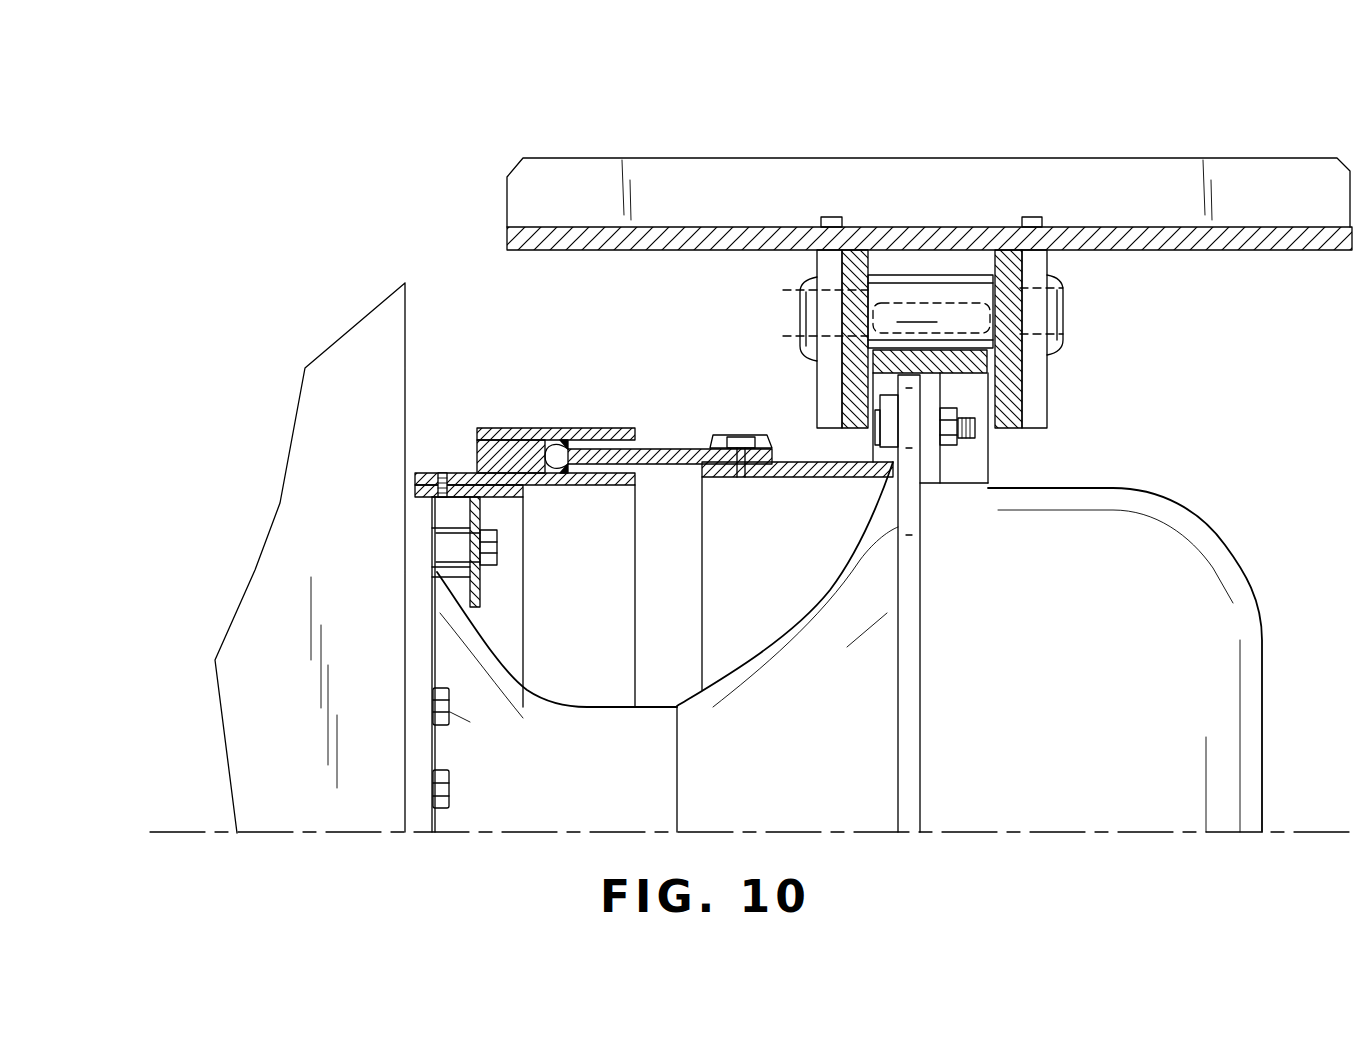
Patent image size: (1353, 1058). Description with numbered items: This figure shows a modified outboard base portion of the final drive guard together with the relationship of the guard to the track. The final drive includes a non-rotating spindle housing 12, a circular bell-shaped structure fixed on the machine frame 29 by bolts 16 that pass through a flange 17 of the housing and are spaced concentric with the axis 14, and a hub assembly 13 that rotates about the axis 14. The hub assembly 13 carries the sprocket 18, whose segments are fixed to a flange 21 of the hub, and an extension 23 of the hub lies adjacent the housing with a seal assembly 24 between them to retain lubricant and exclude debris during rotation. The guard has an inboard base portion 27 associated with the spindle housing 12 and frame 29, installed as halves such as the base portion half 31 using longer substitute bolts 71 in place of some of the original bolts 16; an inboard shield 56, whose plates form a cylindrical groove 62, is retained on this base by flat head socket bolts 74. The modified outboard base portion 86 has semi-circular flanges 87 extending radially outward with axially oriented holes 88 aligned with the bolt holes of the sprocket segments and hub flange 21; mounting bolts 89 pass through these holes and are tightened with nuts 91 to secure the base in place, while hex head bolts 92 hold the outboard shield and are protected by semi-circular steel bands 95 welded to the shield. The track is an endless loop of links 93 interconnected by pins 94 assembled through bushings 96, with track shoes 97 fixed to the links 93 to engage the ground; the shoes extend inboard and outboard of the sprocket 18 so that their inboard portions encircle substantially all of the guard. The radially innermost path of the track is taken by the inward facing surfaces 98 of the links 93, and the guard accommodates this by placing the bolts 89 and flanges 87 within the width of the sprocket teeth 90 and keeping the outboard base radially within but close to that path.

The spindle housing 12 is at (560, 690).
The hub assembly 13 is at (1200, 468).
The axis 14 is at (197, 833).
The bolts 16 is at (430, 792).
The flange 17 is at (432, 518).
The sprocket 18 is at (1057, 278).
The flange 21 is at (908, 410).
The extension 23 is at (807, 617).
The seal assembly 24 is at (677, 707).
The inboard base portion 27 is at (380, 470).
The machine frame 29 is at (367, 340).
The base portion half 31 is at (467, 560).
The inboard shield 56 is at (525, 425).
The cylindrical groove 62 is at (557, 452).
The substitute bolts 71 is at (432, 545).
The flat head socket bolts 74 is at (445, 470).
The outboard base portion 86 is at (808, 457).
The semi-circular flanges 87 is at (880, 474).
The holes 88 is at (943, 447).
The mounting bolts 89 is at (970, 438).
The teeth 90 is at (961, 300).
The nuts 91 is at (970, 447).
The hex head bolts 92 is at (740, 438).
The links 93 is at (833, 303).
The pins 94 is at (820, 353).
The semi-circular steel bands 95 is at (722, 440).
The bushings 96 is at (935, 275).
The track shoes 97 is at (673, 227).
The inward facing surfaces 98 is at (1013, 430).